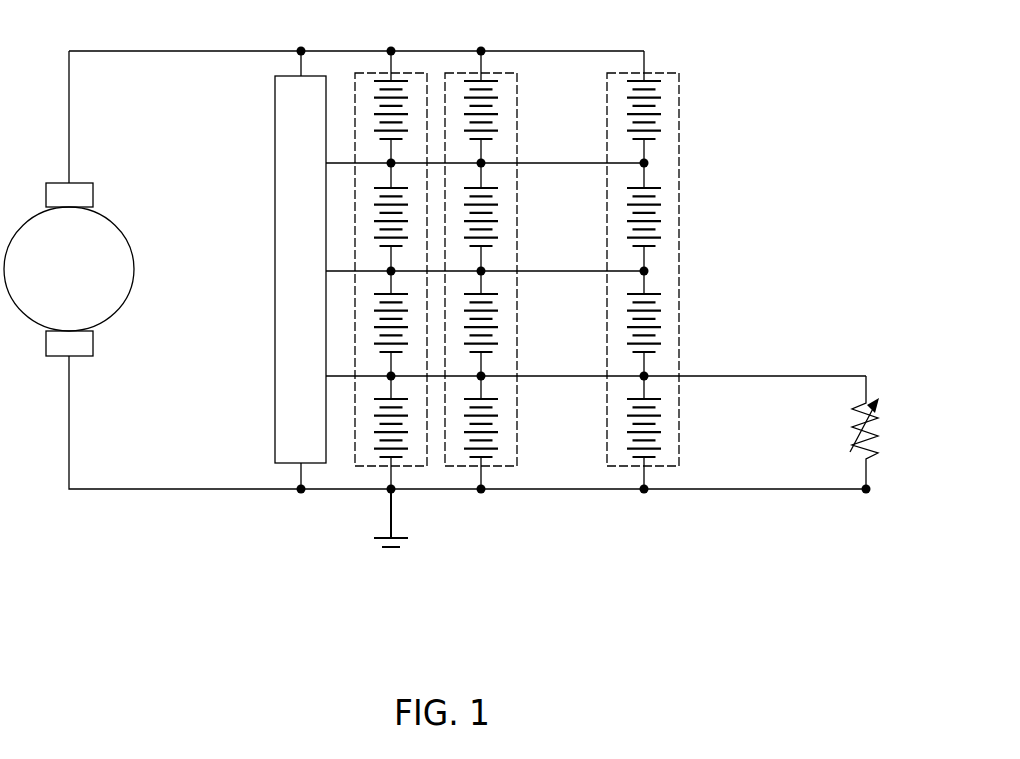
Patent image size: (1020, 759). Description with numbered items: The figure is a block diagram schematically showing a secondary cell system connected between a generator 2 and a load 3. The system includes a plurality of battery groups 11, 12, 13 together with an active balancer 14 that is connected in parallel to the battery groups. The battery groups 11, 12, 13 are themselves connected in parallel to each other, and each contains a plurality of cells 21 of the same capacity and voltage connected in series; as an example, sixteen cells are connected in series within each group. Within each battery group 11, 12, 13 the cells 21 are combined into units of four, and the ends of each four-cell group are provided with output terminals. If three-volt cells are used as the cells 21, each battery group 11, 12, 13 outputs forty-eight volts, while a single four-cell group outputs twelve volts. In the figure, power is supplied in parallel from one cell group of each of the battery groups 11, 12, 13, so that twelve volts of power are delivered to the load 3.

The generator 2 is at (82, 275).
The active balancer 14 is at (288, 238).
The battery group 11 is at (368, 469).
The battery group 12 is at (497, 469).
The battery group 13 is at (651, 275).
The cell 21 is at (653, 79).
The load 3 is at (885, 428).